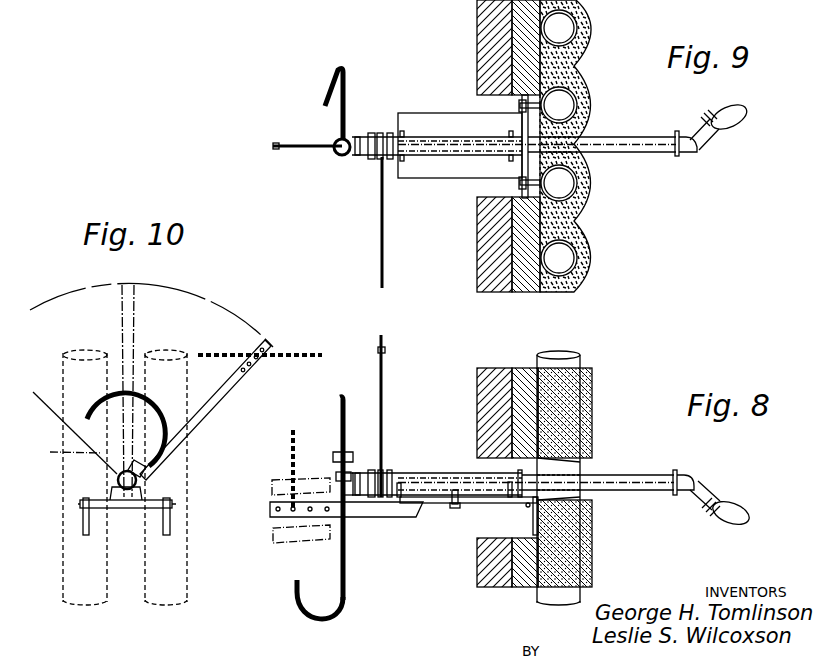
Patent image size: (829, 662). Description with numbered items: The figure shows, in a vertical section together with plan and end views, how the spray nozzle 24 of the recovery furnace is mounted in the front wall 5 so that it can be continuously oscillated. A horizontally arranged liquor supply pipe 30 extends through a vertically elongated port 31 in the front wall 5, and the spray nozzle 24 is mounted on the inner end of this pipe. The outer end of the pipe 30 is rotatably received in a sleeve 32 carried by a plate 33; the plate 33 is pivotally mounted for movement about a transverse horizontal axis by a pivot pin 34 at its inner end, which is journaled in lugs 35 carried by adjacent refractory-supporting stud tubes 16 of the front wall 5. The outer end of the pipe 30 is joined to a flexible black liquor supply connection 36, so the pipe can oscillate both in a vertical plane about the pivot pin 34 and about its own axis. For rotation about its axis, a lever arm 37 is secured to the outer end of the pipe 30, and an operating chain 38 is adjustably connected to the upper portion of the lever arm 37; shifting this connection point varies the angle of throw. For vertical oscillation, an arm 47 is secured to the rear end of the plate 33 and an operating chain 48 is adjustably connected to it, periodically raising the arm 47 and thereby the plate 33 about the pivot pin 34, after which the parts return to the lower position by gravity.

In FIG. 9, the front wall 5 is at (478, 240).
In FIG. 8, the front wall 5 is at (478, 408).
In FIG. 9, the stud tubes 16 is at (573, 109).
In FIG. 8, the stud tubes 16 is at (576, 362).
In FIG. 10, the stud tubes 16 is at (82, 352).
In FIG. 9, the spray nozzle 24 is at (712, 130).
In FIG. 8, the spray nozzle 24 is at (705, 497).
In FIG. 9, the liquor supply pipe 30 is at (641, 147).
In FIG. 8, the liquor supply pipe 30 is at (650, 476).
In FIG. 9, the port 31 is at (556, 136).
In FIG. 8, the port 31 is at (588, 465).
In FIG. 9, the sleeve 32 is at (474, 153).
In FIG. 8, the sleeve 32 is at (433, 474).
In FIG. 9, the plate 33 is at (426, 114).
In FIG. 8, the plate 33 is at (441, 504).
In FIG. 10, the plate 33 is at (152, 497).
In FIG. 9, the pivot pin 34 is at (520, 184).
In FIG. 8, the pivot pin 34 is at (522, 508).
In FIG. 10, the pivot pin 34 is at (176, 504).
In FIG. 9, the lugs 35 is at (520, 105).
In FIG. 8, the lugs 35 is at (532, 530).
In FIG. 10, the lugs 35 is at (170, 532).
In FIG. 9, the flexible black liquor supply connection 36 is at (351, 78).
In FIG. 8, the flexible black liquor supply connection 36 is at (339, 410).
In FIG. 10, the flexible black liquor supply connection 36 is at (101, 441).
In FIG. 9, the lever arm 37 is at (378, 233).
In FIG. 8, the lever arm 37 is at (382, 400).
In FIG. 10, the lever arm 37 is at (220, 393).
In FIG. 10, the operating chain 38 is at (293, 351).
In FIG. 9, the arm 47 is at (298, 152).
In FIG. 8, the arm 47 is at (381, 517).
In FIG. 8, the operating chain 48 is at (286, 452).